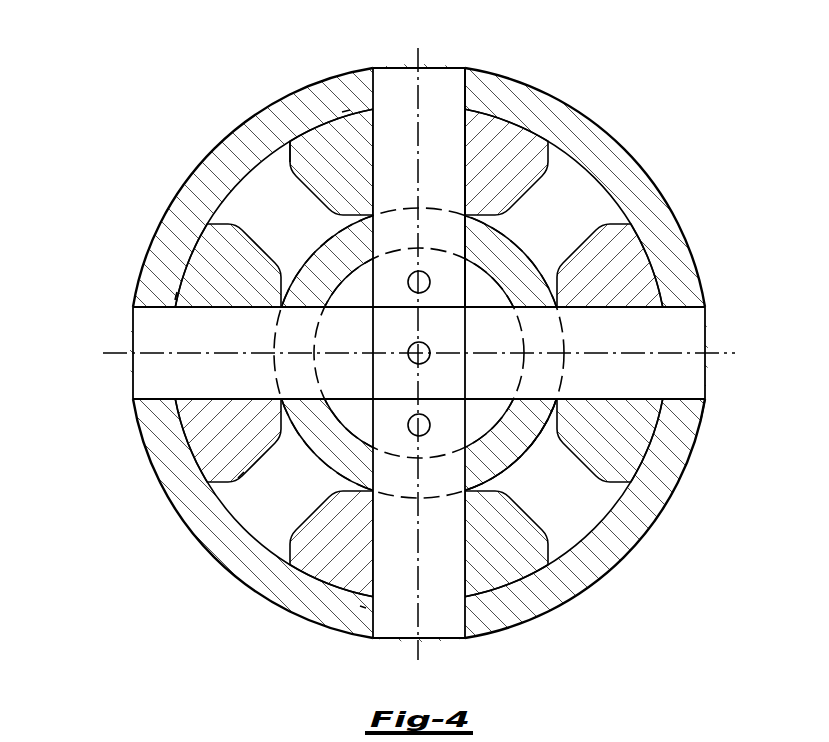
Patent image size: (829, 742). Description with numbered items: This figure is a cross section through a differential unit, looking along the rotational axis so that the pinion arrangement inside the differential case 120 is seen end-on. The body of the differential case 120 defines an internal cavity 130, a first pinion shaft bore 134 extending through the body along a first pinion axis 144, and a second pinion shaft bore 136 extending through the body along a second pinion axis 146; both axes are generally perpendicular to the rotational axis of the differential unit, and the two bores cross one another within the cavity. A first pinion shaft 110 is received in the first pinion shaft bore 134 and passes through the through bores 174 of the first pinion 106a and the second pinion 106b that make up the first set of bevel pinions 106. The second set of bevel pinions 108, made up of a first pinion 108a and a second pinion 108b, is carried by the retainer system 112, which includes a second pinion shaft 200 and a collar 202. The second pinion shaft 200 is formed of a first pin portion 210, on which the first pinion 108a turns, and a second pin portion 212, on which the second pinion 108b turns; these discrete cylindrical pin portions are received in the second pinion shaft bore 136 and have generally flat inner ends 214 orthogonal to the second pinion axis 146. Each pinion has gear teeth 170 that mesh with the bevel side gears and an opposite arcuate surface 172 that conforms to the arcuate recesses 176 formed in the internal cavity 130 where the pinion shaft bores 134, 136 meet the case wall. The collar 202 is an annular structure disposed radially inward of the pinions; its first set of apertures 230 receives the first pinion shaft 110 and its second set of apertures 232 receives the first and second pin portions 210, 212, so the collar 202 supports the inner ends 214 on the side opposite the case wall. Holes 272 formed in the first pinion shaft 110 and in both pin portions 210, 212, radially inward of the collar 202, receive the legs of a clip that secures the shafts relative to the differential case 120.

The first set of bevel pinions 106 is at (203, 442).
The first pinion 106a is at (220, 258).
The second pinion 106b is at (632, 248).
The second set of bevel pinions 108 is at (312, 568).
The first pinion 108a is at (520, 563).
The second pinion 108b is at (328, 155).
The first pinion shaft 110 is at (693, 382).
The retainer system 112 is at (400, 80).
The differential case 120 is at (568, 120).
The internal cavity 130 is at (580, 513).
The first pinion shaft bore 134 is at (680, 400).
The second pinion shaft bore 136 is at (358, 613).
The first pinion axis 144 is at (108, 353).
The second pinion axis 146 is at (420, 648).
The gear teeth 170 is at (283, 168).
The surface 172 is at (353, 110).
The through bore 174 is at (465, 140).
The arcuate recesses 176 is at (650, 427).
The second pinion shaft 200 is at (445, 66).
The collar 202 is at (320, 440).
The first pin portion 210 is at (453, 619).
The second pin portion 212 is at (455, 88).
The inner ends 214 is at (455, 288).
The first set of apertures 230 is at (302, 307).
The second set of apertures 232 is at (468, 465).
The holes 272 is at (410, 430).